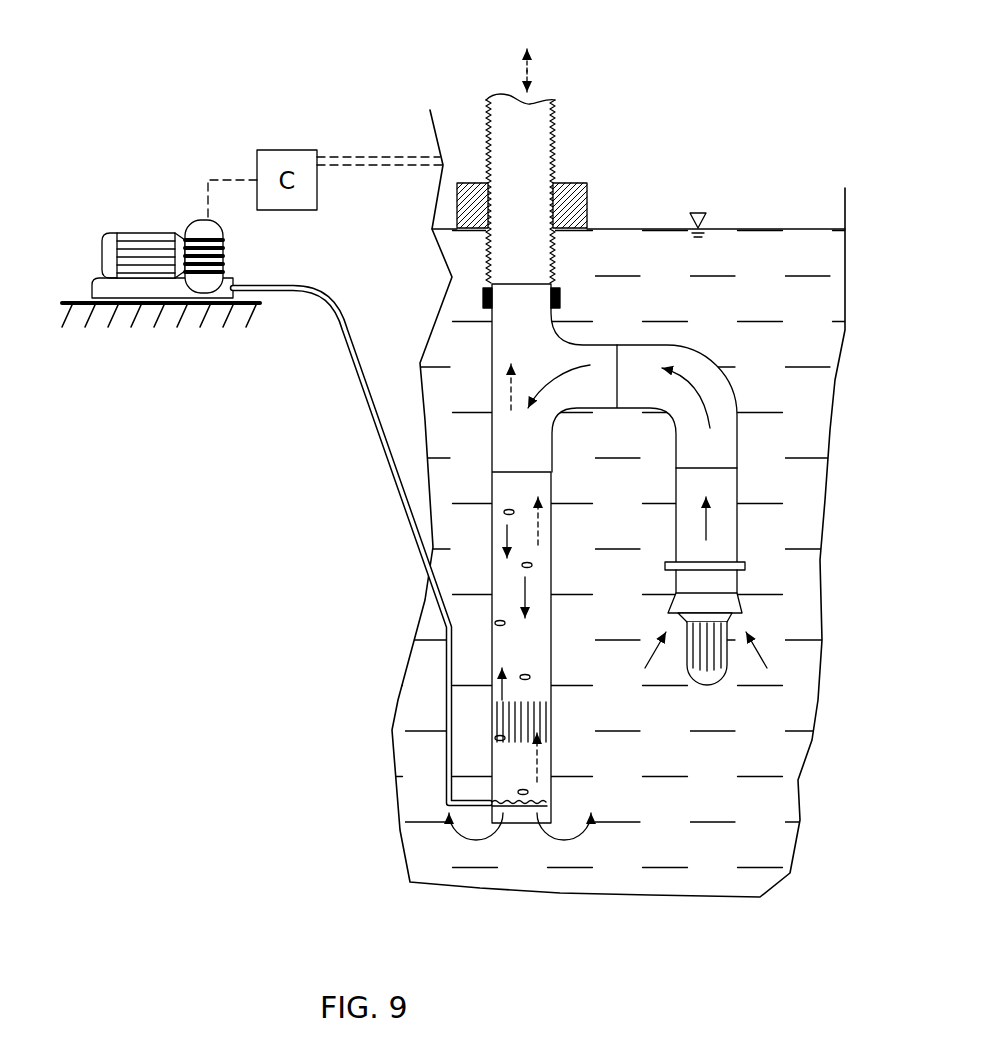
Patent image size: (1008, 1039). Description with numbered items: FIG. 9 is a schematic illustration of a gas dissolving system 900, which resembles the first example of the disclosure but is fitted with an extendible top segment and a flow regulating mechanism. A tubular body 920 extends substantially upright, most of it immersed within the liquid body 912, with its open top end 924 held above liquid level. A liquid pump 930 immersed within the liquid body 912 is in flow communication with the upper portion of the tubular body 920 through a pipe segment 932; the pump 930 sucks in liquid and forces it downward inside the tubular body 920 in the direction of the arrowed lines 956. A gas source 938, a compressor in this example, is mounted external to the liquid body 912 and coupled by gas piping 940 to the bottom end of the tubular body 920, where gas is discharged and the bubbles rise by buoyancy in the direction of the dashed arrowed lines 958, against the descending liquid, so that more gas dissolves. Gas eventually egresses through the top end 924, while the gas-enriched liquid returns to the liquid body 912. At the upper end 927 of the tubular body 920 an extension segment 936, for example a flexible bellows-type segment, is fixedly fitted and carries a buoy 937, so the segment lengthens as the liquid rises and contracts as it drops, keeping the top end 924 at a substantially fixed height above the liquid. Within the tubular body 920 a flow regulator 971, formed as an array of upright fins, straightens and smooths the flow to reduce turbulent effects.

The dissolving system 900 is at (770, 128).
The liquid body 912 is at (744, 238).
The tubular body 920 is at (485, 634).
The top end 924 is at (534, 122).
The end of the tubular body 927 is at (520, 302).
The liquid pump 930 is at (705, 660).
The pipe segment 932 is at (690, 373).
The extension segment 936 is at (520, 243).
The buoy 937 is at (572, 208).
The gas source 938 is at (144, 233).
The gas piping 940 is at (378, 422).
The arrowed lines 956 is at (530, 598).
The dashed arrowed lines 958 is at (540, 524).
The flow regulator 971 is at (545, 718).